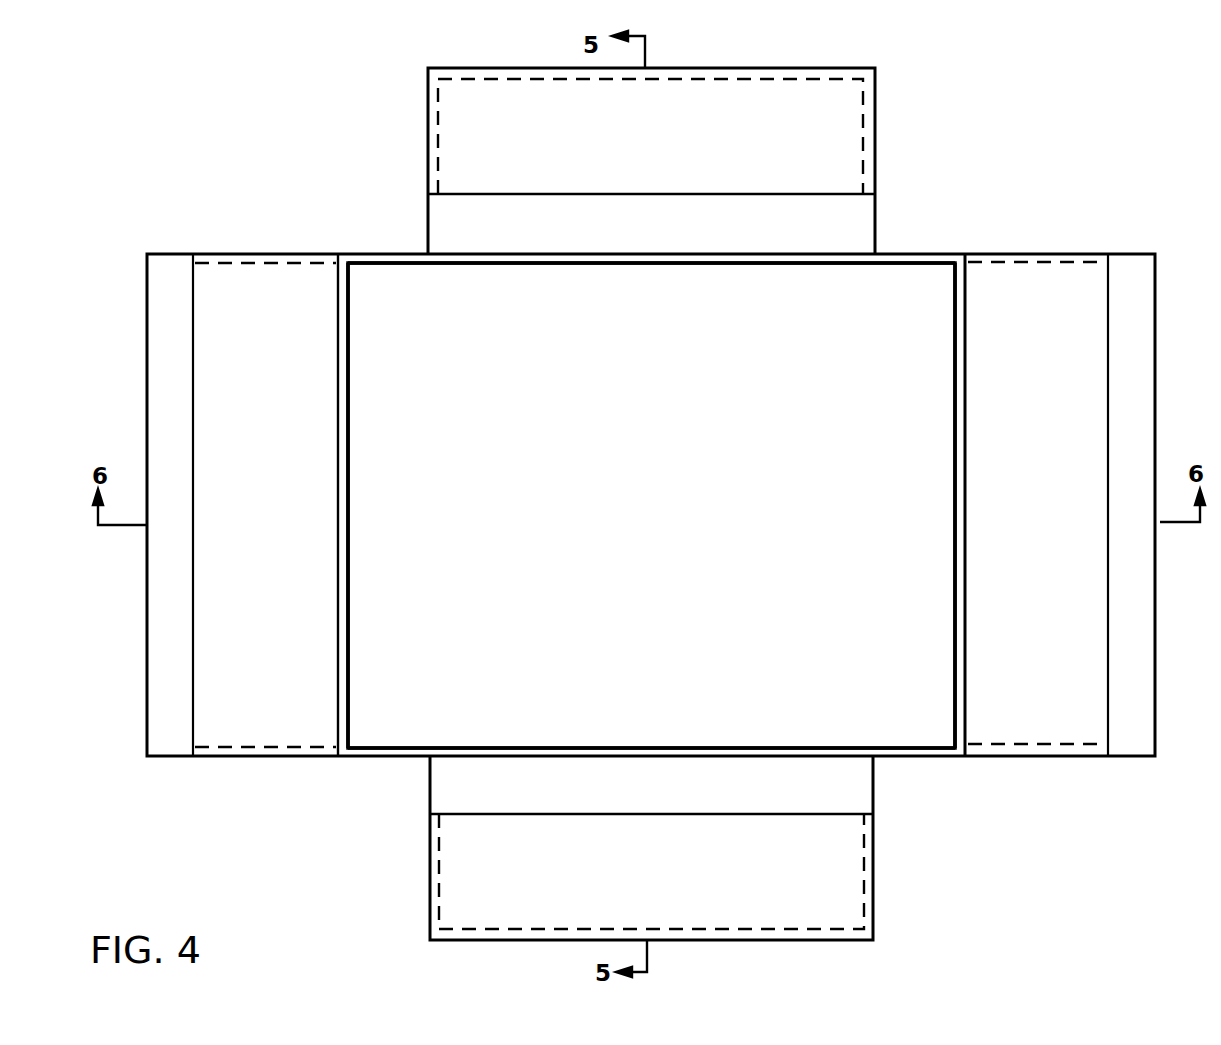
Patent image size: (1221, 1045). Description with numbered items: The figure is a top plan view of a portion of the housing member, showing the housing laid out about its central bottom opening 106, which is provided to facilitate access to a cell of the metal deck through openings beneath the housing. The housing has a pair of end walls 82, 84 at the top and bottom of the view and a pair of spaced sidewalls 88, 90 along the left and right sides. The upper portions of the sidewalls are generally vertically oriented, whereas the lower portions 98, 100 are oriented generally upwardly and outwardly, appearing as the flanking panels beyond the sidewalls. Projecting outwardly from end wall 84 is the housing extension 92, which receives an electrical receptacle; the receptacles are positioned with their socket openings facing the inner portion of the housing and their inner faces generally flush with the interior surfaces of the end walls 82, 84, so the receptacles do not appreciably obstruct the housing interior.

The end wall 82 is at (825, 258).
The end wall 84 is at (782, 754).
The sidewall 88 is at (350, 563).
The sidewall 90 is at (963, 543).
The housing extension 92 is at (850, 865).
The lower portion of sidewall 98 is at (1065, 724).
The lower portion of sidewall 100 is at (273, 732).
The bottom opening 106 is at (895, 380).